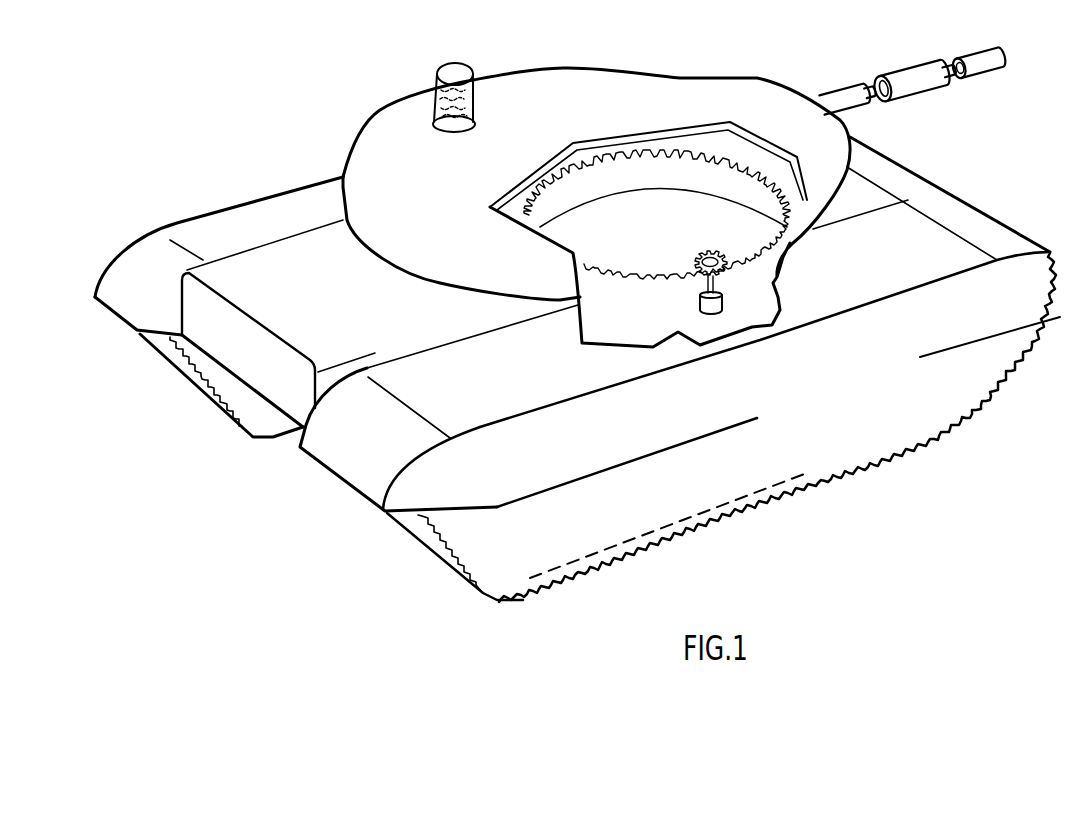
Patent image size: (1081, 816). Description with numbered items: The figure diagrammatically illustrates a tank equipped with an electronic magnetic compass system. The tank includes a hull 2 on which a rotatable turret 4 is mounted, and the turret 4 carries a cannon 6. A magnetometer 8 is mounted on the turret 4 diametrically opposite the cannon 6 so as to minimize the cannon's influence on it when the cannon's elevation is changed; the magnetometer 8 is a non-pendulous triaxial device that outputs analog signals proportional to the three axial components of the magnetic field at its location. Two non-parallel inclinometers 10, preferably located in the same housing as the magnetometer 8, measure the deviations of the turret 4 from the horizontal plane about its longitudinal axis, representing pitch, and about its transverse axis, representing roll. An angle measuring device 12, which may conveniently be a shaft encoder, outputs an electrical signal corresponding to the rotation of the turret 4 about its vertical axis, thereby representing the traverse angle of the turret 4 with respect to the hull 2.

The hull 2 is at (272, 257).
The turret 4 is at (647, 73).
The cannon 6 is at (927, 81).
The magnetometer 8 is at (443, 92).
The inclinometers 10 is at (436, 107).
The angle measuring device 12 is at (716, 284).